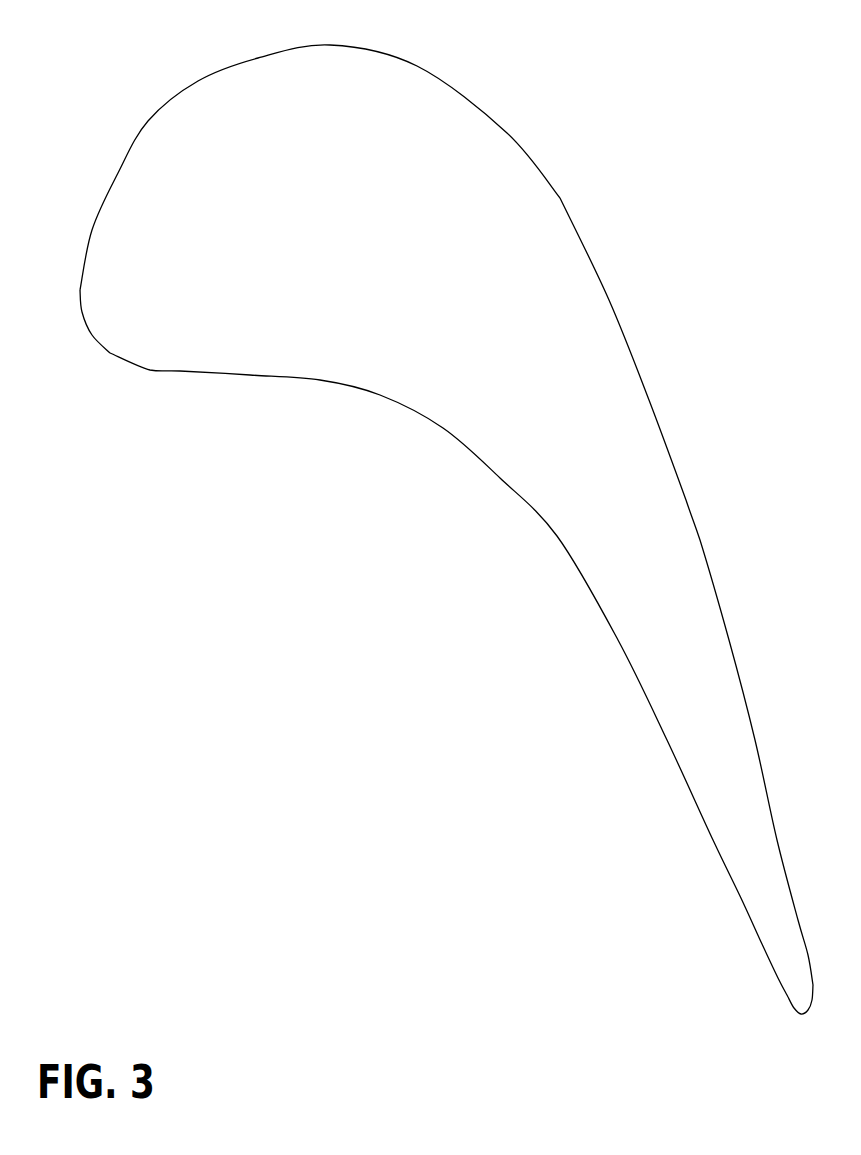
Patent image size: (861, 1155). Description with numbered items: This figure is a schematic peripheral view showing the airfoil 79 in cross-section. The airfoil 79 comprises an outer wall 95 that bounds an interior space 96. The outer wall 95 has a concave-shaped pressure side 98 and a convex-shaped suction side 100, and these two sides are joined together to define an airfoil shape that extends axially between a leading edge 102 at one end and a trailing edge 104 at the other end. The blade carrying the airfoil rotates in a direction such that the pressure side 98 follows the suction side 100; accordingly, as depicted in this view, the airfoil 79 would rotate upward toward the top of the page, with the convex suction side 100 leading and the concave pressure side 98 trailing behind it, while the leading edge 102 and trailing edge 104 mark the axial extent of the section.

The airfoil 79 is at (144, 111).
The outer wall 95 is at (700, 540).
The interior space 96 is at (358, 231).
The pressure side 98 is at (443, 428).
The suction side 100 is at (562, 197).
The leading edge 102 is at (88, 332).
The trailing edge 104 is at (802, 1015).